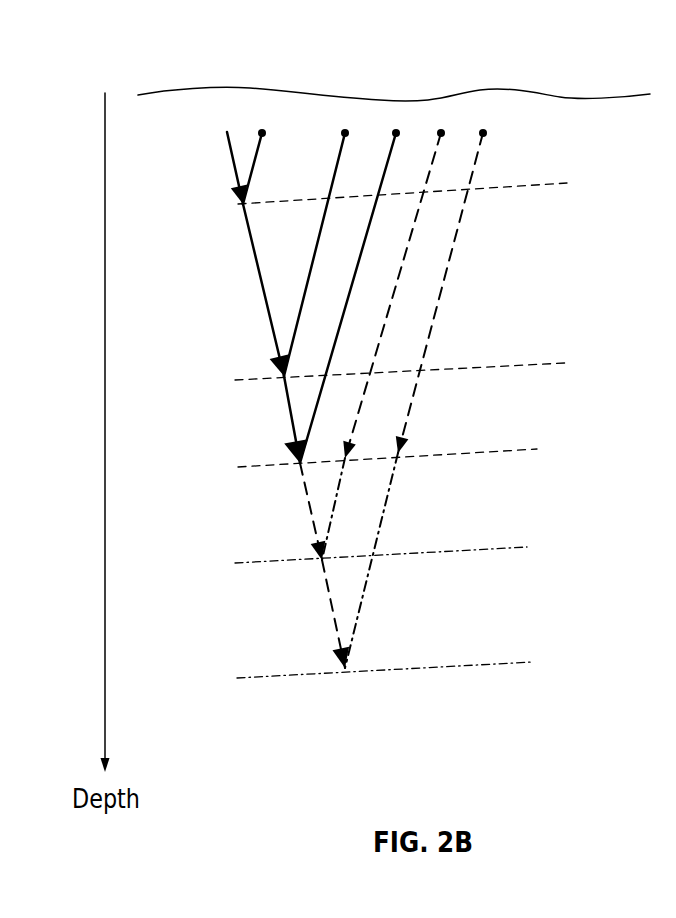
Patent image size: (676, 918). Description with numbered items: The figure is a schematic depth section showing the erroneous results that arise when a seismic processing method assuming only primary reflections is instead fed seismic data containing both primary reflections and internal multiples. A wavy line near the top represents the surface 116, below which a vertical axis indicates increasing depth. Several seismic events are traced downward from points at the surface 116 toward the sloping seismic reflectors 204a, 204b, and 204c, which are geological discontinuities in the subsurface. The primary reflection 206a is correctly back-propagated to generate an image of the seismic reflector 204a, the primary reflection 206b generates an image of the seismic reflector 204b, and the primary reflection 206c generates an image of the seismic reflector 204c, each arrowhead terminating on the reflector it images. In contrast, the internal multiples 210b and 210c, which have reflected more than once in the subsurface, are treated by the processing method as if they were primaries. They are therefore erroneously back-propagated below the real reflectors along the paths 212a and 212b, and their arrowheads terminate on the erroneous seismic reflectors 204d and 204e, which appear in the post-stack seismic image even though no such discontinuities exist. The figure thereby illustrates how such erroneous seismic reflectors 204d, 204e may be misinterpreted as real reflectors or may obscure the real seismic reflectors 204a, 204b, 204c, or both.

The tissue surface 116 is at (527, 93).
The seismic reflector 204a is at (551, 184).
The seismic reflector 204b is at (565, 363).
The seismic reflector 204c is at (522, 449).
The erroneous seismic reflector 204d is at (497, 548).
The erroneous seismic reflector 204e is at (520, 660).
The primary reflection 206a is at (243, 192).
The primary reflection 206b is at (284, 362).
The primary reflection 206c is at (298, 448).
The internal multiple 210b is at (415, 222).
The internal multiple 210c is at (445, 273).
The erroneous back-propagation 212a is at (333, 502).
The erroneous back-propagation 212b is at (360, 608).